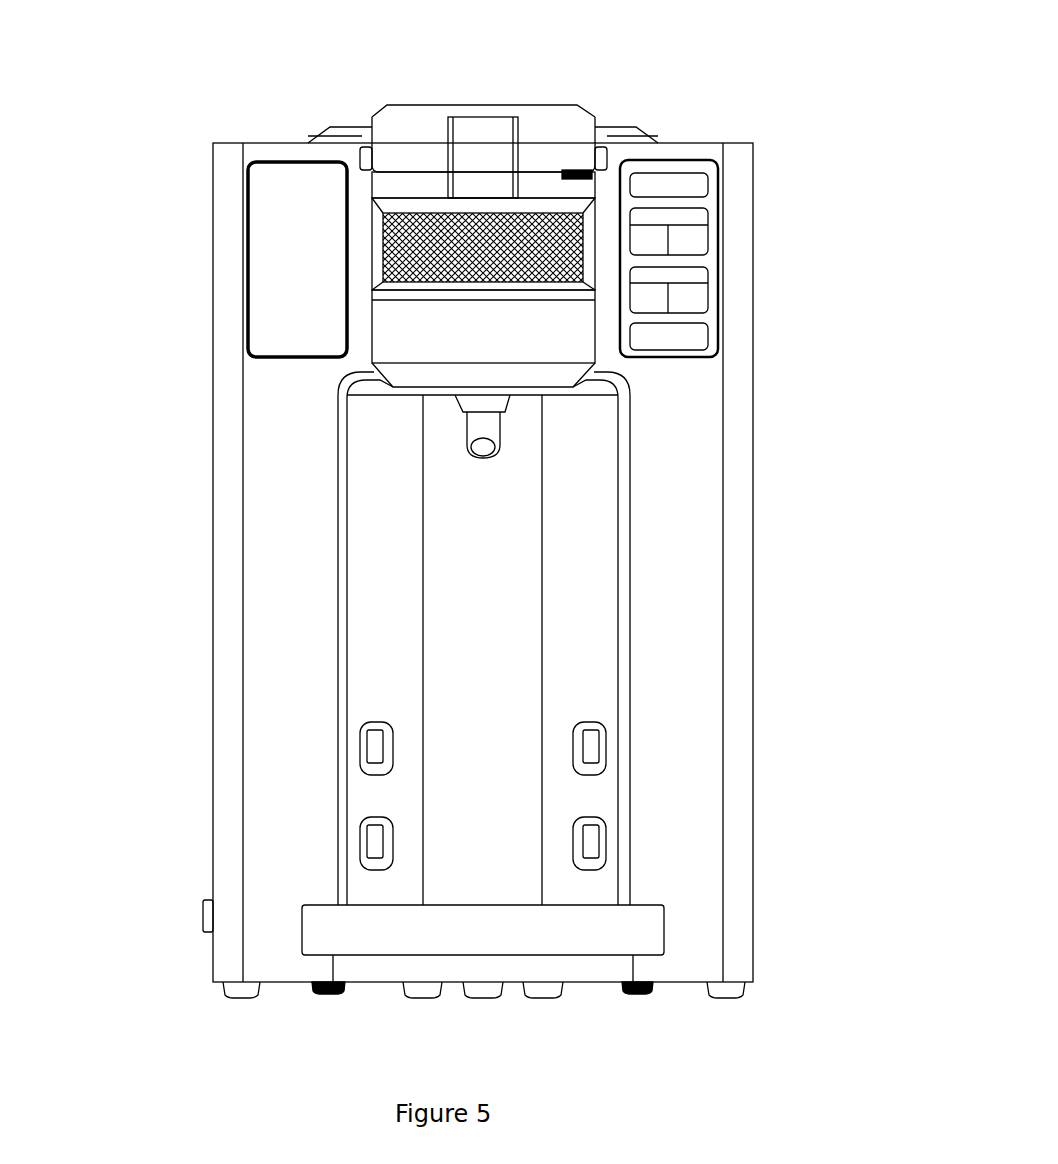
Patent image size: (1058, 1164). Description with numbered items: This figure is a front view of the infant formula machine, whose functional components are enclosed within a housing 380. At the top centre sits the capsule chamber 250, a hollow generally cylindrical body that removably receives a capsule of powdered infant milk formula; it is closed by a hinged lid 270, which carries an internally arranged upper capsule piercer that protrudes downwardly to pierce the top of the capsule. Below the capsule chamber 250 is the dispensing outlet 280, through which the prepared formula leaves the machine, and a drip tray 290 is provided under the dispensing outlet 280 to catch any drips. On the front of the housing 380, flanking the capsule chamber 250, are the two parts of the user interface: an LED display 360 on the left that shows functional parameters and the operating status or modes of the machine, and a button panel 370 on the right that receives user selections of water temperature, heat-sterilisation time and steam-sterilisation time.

The capsule chamber 250 is at (488, 338).
The hinged lid 270 is at (510, 103).
The dispensing outlet 280 is at (485, 460).
The drip tray 290 is at (488, 933).
The LED display 360 is at (273, 250).
The button panel 370 is at (700, 245).
The housing 380 is at (755, 815).